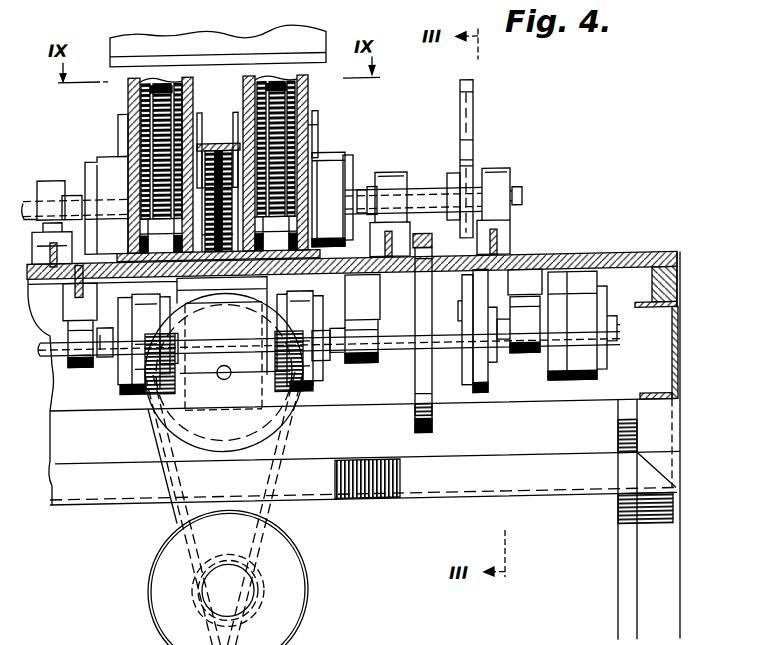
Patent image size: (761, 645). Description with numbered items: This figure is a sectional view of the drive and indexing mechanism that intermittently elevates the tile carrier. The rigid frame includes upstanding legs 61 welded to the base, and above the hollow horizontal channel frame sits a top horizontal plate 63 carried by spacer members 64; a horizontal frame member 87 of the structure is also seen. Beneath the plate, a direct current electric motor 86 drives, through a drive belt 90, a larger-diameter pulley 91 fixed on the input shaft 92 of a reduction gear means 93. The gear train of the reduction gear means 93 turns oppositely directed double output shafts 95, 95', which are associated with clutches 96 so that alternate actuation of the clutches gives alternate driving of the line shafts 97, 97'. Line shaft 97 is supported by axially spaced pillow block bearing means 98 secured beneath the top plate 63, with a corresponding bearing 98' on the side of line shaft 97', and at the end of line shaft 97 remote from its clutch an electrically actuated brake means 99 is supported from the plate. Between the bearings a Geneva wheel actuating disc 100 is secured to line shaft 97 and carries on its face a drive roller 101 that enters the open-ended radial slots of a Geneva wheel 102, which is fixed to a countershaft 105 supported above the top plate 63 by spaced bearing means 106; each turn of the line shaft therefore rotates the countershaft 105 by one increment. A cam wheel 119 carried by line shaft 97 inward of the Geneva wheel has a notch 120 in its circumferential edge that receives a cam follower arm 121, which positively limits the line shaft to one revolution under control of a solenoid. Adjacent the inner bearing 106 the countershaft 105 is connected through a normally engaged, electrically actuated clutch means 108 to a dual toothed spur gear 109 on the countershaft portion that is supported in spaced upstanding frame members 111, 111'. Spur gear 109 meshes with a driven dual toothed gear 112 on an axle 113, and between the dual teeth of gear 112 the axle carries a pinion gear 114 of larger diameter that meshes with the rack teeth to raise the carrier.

The upstanding legs 61 is at (683, 599).
The top horizontal plate 63 is at (603, 258).
The spacer members 64 is at (680, 287).
The direct current electric motor 86 is at (305, 571).
The frame cross member 87 is at (425, 502).
The drive belt 90 is at (282, 511).
The pulley 91 is at (165, 433).
The input shaft 92 is at (228, 368).
The reduction gear means 93 is at (210, 442).
The output shaft 95 is at (299, 341).
The output shaft 95' is at (145, 344).
The clutch 96 is at (120, 380).
The line shaft 97 is at (370, 361).
The line shaft 97' is at (69, 364).
The pillow block bearing means 98 is at (436, 329).
The bearing 98' is at (86, 341).
The brake means 99 is at (590, 355).
The Geneva wheel actuating disc 100 is at (488, 383).
The drive roller 101 is at (460, 312).
The Geneva wheel 102 is at (485, 106).
The countershaft 105 is at (522, 200).
The bearing means 106 is at (405, 173).
The clutch means 108 is at (337, 157).
The dual toothed spur gear 109 is at (310, 179).
The upstanding frame members 111 is at (273, 163).
The gear stack 111' is at (131, 165).
The driven dual toothed gear 112 is at (312, 104).
The axle 113 is at (318, 125).
The pinion gear 114 is at (275, 80).
The cam wheel 119 is at (435, 420).
The notch 120 is at (432, 242).
The cam follower arm 121 is at (420, 224).